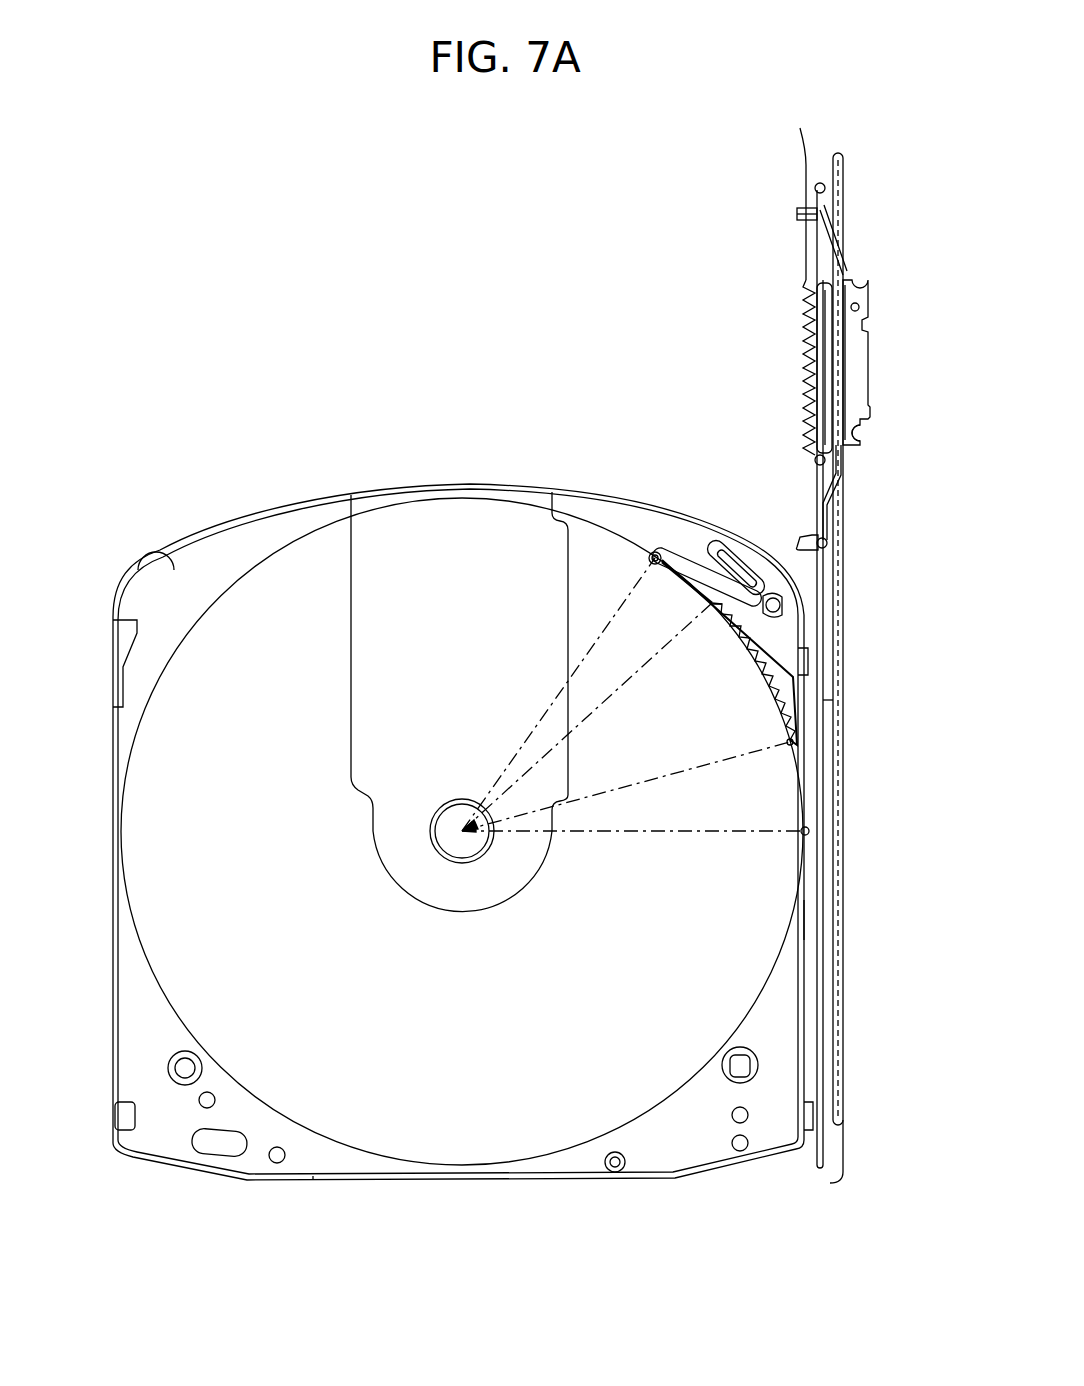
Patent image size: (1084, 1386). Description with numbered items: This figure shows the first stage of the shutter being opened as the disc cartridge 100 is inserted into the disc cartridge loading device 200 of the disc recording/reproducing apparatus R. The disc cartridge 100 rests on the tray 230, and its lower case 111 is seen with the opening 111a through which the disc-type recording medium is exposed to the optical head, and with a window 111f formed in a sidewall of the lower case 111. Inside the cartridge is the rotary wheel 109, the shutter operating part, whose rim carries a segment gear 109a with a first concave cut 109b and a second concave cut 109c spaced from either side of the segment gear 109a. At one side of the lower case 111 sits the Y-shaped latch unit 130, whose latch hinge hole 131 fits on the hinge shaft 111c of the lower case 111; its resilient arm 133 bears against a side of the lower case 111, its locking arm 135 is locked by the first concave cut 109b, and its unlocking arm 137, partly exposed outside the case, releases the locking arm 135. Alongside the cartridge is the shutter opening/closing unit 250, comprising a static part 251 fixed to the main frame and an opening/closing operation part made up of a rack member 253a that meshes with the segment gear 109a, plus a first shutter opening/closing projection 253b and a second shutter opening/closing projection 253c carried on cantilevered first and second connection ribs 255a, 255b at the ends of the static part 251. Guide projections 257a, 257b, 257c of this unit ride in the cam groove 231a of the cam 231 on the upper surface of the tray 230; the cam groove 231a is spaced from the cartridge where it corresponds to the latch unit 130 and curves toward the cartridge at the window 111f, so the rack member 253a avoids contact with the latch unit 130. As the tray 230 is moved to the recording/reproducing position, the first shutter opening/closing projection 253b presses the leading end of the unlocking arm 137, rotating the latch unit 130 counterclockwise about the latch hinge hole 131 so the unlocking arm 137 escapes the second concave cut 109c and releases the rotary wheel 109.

The disc cartridge 100 is at (273, 1182).
The lower case 111 is at (315, 1182).
The opening 111a is at (362, 520).
The hinge shaft 111c is at (747, 625).
The window 111f is at (812, 922).
The rotary wheel 109 is at (760, 1012).
The segment gear 109a is at (796, 742).
The first concave cut 109b is at (810, 833).
The second concave cut 109c is at (655, 550).
The latch unit 130 is at (728, 546).
The latch hinge hole 131 is at (760, 660).
The resilient arm 133 is at (715, 545).
The locking arm 135 is at (688, 578).
The unlocking arm 137 is at (780, 628).
The disc cartridge loading device 200 is at (850, 815).
The tray 230 is at (775, 410).
The cam 231 is at (838, 680).
The cam groove 231a is at (832, 702).
The shutter opening/closing unit 250 is at (858, 372).
The static part 251 is at (855, 340).
The rack member 253a is at (800, 350).
The first shutter opening/closing projection 253b is at (800, 535).
The second shutter opening/closing projection 253c is at (796, 212).
The first connection rib 255a is at (832, 495).
The second connection rib 255b is at (836, 245).
The guide projection 257a is at (828, 541).
The guide projection 257b is at (826, 460).
The guide projection 257c is at (826, 190).
The disc recording/reproducing apparatus R is at (110, 1020).